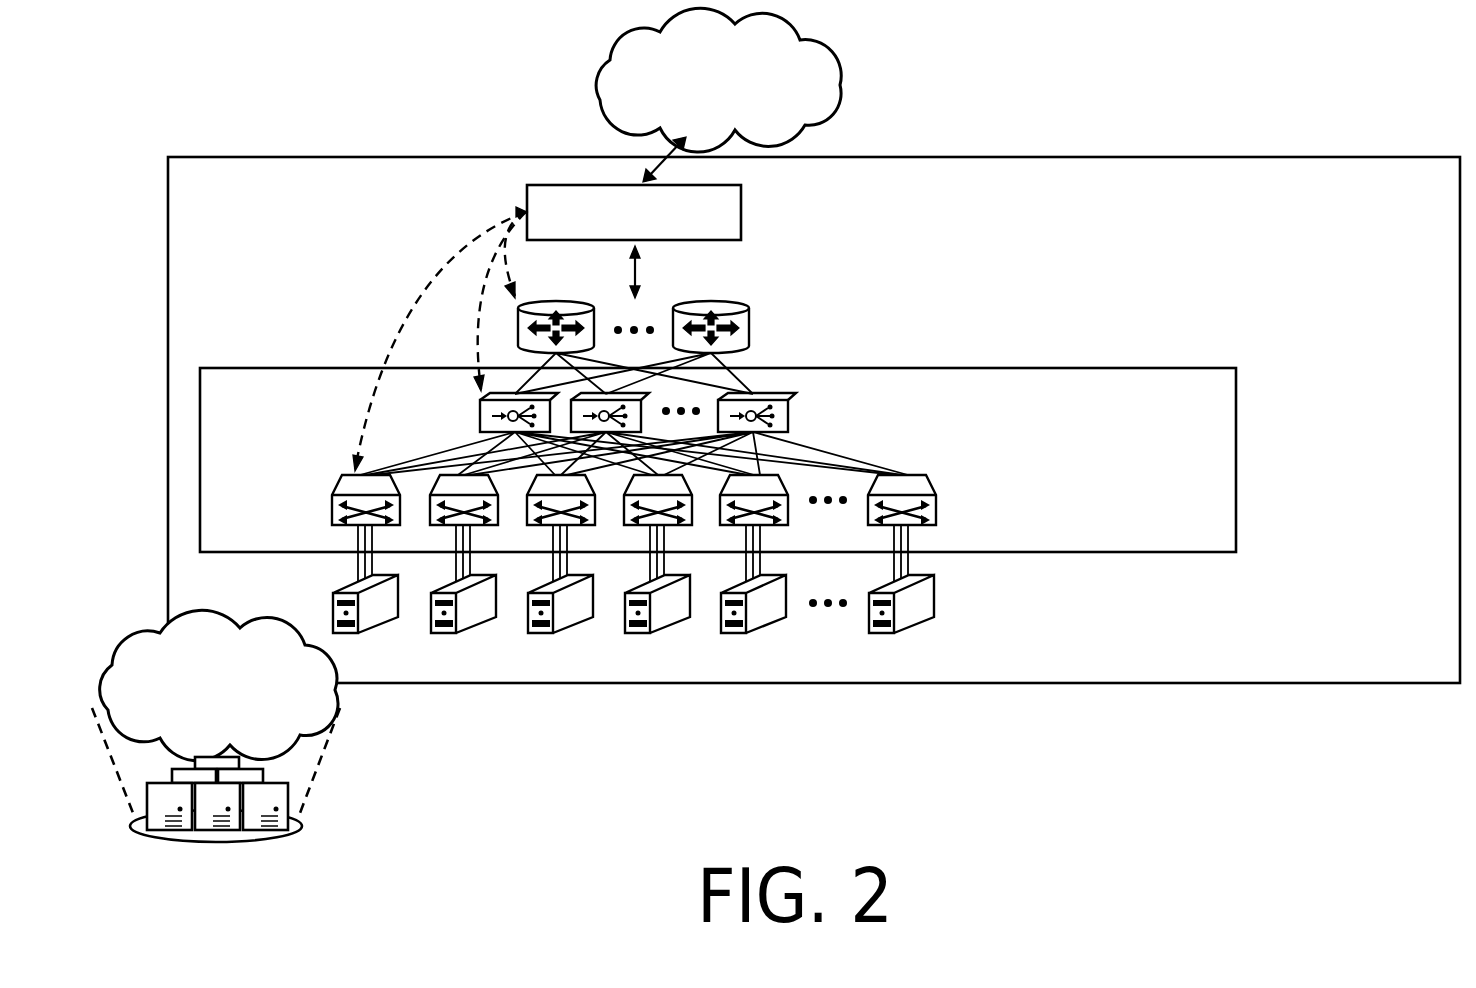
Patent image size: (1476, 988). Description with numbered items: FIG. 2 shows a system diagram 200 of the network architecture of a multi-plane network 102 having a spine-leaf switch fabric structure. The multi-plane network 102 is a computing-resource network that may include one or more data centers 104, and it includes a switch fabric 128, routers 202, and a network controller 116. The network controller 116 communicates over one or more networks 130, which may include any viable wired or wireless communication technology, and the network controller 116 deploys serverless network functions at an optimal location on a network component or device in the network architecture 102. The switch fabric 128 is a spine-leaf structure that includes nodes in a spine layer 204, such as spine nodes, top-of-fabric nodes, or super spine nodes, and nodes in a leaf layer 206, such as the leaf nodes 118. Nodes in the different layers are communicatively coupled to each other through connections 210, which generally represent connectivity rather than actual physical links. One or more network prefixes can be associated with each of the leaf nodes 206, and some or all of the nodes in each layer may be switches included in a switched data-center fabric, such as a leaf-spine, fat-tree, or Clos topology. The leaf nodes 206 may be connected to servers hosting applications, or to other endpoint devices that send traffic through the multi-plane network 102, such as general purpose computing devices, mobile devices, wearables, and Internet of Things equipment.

The data center network architecture 200 is at (256, 46).
The network(s) 130 is at (718, 80).
The network controller 116 is at (634, 212).
The routers 202 is at (801, 327).
The switch fabric 128 is at (1236, 432).
The spine layer 204 is at (799, 409).
The connections 210 is at (837, 455).
The leaf layer 206 is at (722, 498).
The leaf nodes 118 is at (709, 603).
The network architecture 102 is at (219, 685).
The data centers 104 is at (320, 813).